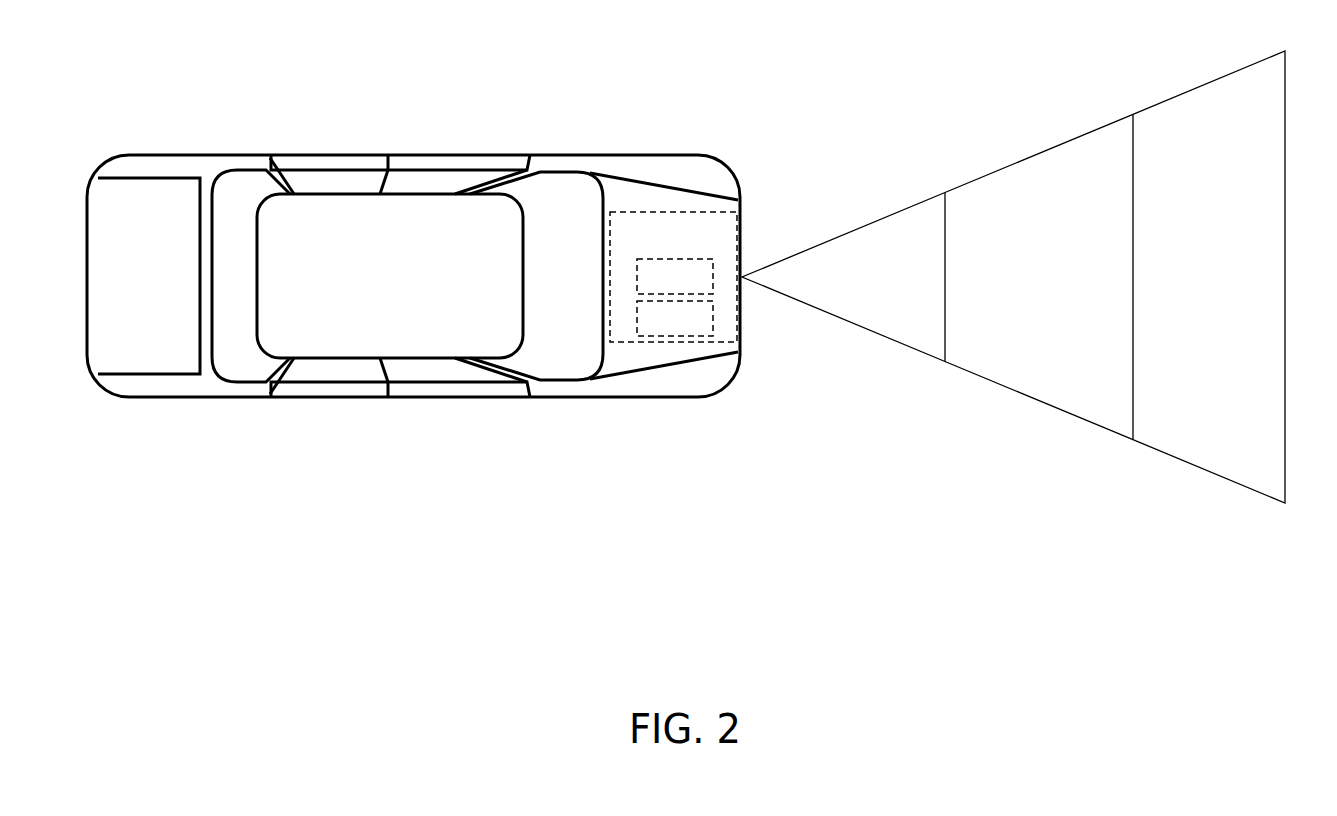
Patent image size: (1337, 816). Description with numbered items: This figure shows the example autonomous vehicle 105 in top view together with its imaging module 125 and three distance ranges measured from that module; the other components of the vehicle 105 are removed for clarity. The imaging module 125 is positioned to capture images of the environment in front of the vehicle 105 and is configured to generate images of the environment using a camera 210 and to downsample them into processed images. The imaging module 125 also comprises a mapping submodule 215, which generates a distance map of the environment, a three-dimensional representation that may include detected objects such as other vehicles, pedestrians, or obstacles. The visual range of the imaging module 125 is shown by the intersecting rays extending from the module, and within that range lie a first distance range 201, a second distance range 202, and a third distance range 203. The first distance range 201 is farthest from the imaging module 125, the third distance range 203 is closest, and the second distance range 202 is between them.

The vehicle 105 is at (695, 155).
The imaging module 125 is at (673, 277).
The camera 210 is at (675, 276).
The mapping submodule 215 is at (675, 318).
The first distance range 201 is at (1209, 277).
The second distance range 202 is at (1039, 276).
The third distance range 203 is at (843, 277).